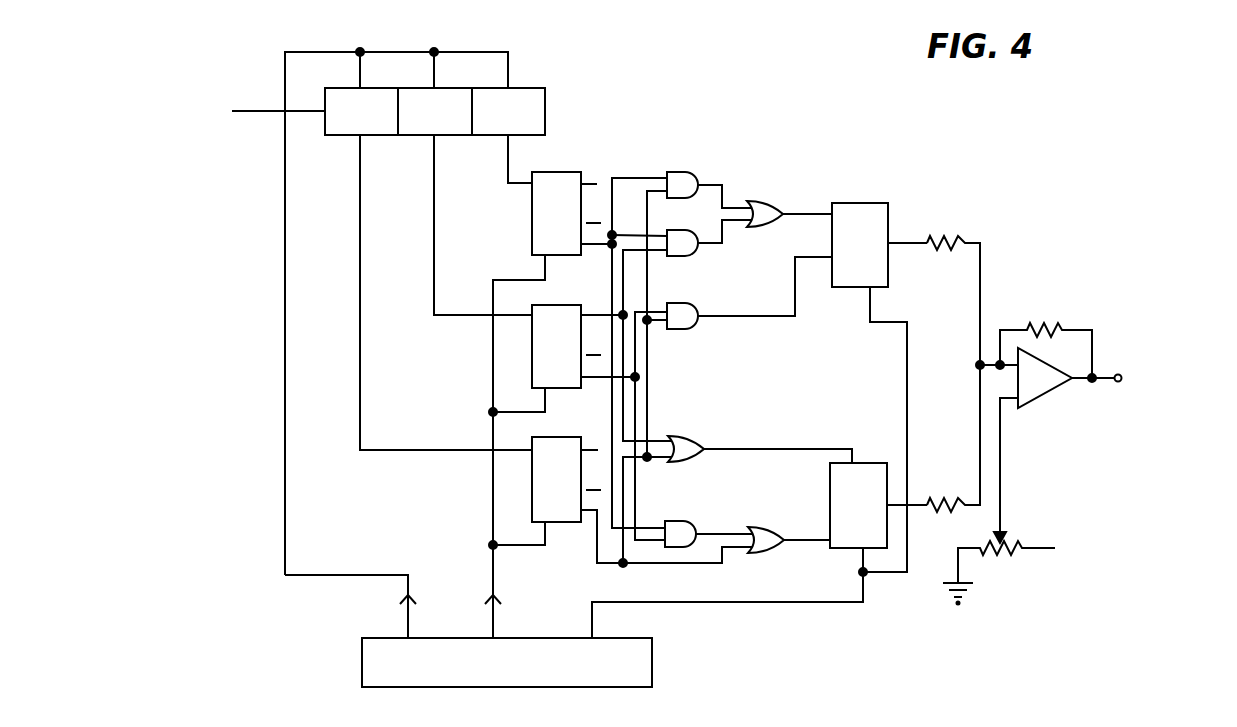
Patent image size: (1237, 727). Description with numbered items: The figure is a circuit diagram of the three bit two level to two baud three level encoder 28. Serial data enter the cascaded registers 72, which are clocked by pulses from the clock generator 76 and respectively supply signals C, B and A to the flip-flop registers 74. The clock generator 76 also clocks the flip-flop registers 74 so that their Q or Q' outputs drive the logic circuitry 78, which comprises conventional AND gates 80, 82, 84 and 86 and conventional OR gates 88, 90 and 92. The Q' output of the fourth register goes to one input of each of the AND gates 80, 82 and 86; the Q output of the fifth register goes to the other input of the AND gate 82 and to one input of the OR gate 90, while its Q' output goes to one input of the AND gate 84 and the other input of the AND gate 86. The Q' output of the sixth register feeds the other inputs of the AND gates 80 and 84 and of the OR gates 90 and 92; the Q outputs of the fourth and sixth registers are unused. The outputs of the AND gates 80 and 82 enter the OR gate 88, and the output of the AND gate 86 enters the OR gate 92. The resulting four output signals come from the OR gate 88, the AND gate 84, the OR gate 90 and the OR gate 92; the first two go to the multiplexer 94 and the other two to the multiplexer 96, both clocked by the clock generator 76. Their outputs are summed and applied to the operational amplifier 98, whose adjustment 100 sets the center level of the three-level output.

The three bit two level to two baud three level encoder 28 is at (246, 466).
The cascaded registers 72 is at (513, 72).
The flip-flop registers 74 is at (562, 164).
The clock generator 76 is at (642, 687).
The logic circuitry 78 is at (687, 128).
The AND gate 80 is at (696, 172).
The AND gate 82 is at (698, 230).
The AND gate 84 is at (691, 303).
The AND gate 86 is at (696, 521).
The OR gate 88 is at (767, 200).
The OR gate 90 is at (703, 421).
The OR gate 92 is at (766, 528).
The multiplexer 94 is at (879, 387).
The multiplexer 96 is at (759, 550).
The operational amplifier 98 is at (1061, 444).
The adjustment 100 is at (1024, 536).